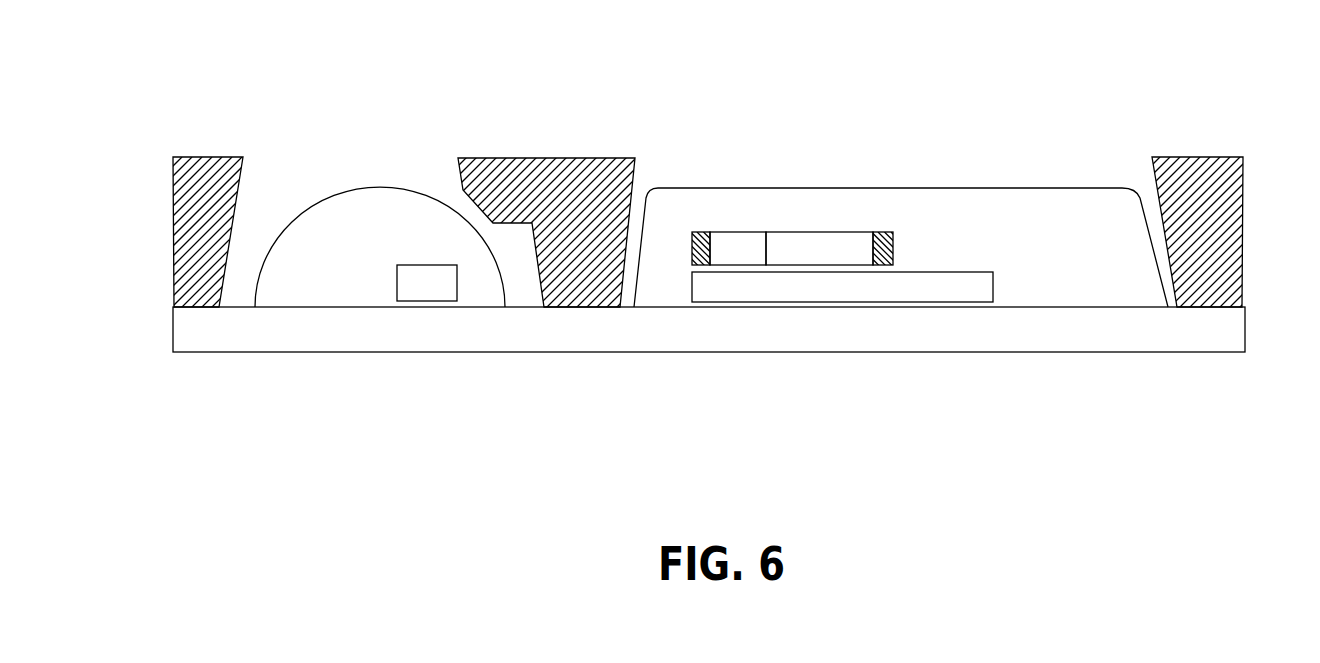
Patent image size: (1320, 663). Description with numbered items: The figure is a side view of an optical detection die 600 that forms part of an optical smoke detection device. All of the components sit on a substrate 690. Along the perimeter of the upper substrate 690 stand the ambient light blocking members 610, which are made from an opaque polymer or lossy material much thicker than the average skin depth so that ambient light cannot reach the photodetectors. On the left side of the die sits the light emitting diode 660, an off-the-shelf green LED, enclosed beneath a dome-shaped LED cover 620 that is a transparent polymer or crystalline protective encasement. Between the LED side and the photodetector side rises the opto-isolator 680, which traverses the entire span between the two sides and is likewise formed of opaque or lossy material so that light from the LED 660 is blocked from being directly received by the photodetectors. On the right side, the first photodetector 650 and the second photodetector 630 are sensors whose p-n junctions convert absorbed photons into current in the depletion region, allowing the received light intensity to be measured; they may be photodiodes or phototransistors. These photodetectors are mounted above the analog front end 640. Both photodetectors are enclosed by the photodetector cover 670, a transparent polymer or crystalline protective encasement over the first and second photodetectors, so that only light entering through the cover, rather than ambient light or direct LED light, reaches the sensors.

The optical detection die 600 is at (963, 421).
The ambient light blocking members 610 is at (210, 157).
The LED cover 620 is at (342, 188).
The photodetector (PD2) 630 is at (804, 223).
The analog front end (AFE) 640 is at (922, 263).
The photodetector (PD1) 650 is at (724, 223).
The light emitting diode (LED) 660 is at (438, 255).
The photodetector cover 670 is at (846, 185).
The opto-isolator 680 is at (557, 157).
The substrate 690 is at (539, 369).